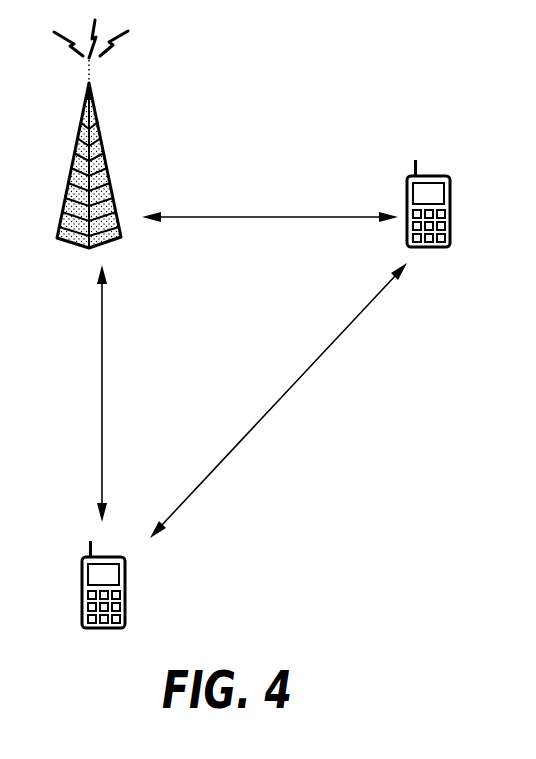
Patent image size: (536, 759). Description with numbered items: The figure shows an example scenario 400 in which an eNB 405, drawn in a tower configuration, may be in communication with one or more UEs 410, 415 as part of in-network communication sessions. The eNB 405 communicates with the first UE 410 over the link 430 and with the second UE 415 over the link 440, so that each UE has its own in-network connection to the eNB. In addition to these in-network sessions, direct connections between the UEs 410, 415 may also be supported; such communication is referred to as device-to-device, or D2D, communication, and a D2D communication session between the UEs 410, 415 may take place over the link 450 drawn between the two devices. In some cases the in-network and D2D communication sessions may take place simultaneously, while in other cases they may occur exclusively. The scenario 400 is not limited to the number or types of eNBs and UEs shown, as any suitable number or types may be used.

The example scenario 400 is at (378, 606).
The eNB 405 is at (85, 104).
The UE 410 is at (82, 575).
The UE 415 is at (428, 176).
The link 430 is at (103, 395).
The link 440 is at (272, 215).
The link 450 is at (279, 403).